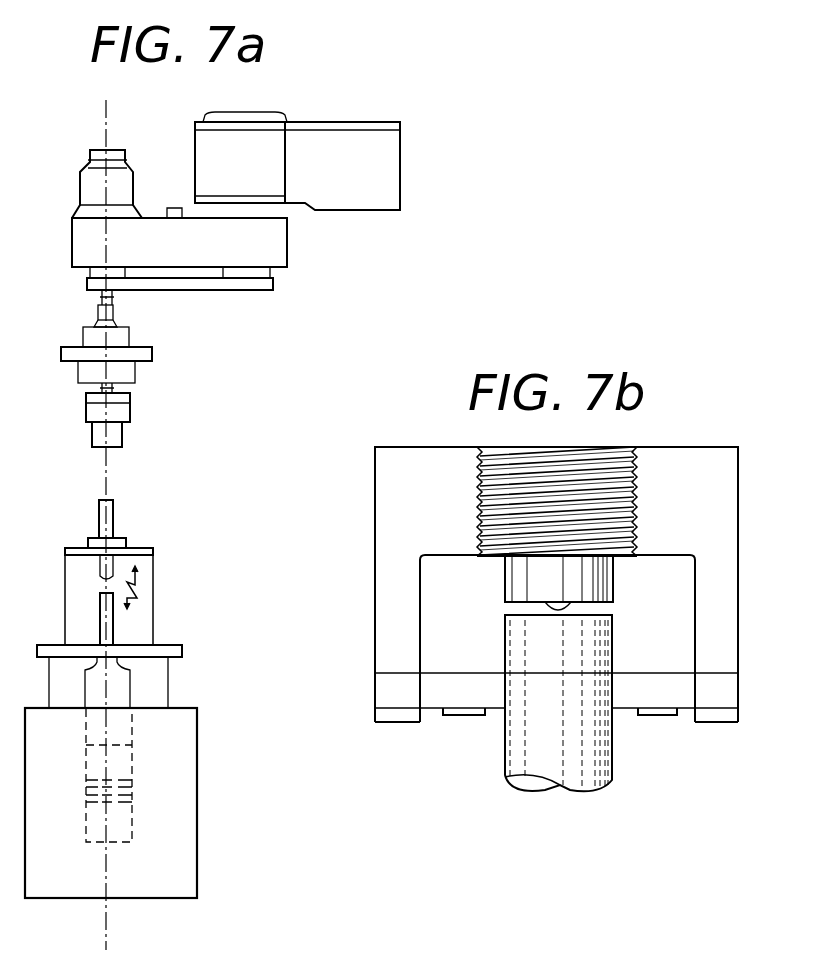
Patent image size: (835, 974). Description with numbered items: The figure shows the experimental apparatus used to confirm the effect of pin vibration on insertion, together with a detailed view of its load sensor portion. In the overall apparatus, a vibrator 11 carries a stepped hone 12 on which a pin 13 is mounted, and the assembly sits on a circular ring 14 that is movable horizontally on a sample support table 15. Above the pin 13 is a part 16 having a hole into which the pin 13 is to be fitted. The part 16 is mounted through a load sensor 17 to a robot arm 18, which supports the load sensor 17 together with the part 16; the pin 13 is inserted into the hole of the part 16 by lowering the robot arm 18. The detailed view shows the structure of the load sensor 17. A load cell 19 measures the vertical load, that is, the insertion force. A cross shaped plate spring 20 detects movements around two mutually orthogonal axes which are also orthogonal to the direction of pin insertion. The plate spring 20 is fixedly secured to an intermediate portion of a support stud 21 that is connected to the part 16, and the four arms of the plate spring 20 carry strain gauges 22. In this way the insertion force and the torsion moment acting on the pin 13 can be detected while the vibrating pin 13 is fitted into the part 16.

In FIG. 7a, the vibrator 11 is at (132, 815).
In FIG. 7a, the stepped hone 12 is at (113, 623).
In FIG. 7a, the pin 13 is at (113, 515).
In FIG. 7a, the circular ring 14 is at (126, 543).
In FIG. 7a, the sample support table 15 is at (153, 573).
In FIG. 7a, the part having a hole 16 is at (122, 438).
In FIG. 7a, the load sensor 17 is at (85, 410).
In FIG. 7b, the load sensor 17 is at (726, 436).
In FIG. 7a, the robot arm 18 is at (70, 242).
In FIG. 7b, the load cell 19 is at (613, 582).
In FIG. 7b, the cross shaped plate spring 20 is at (432, 708).
In FIG. 7b, the support stud 21 is at (612, 758).
In FIG. 7b, the strain gauges 22 is at (660, 715).